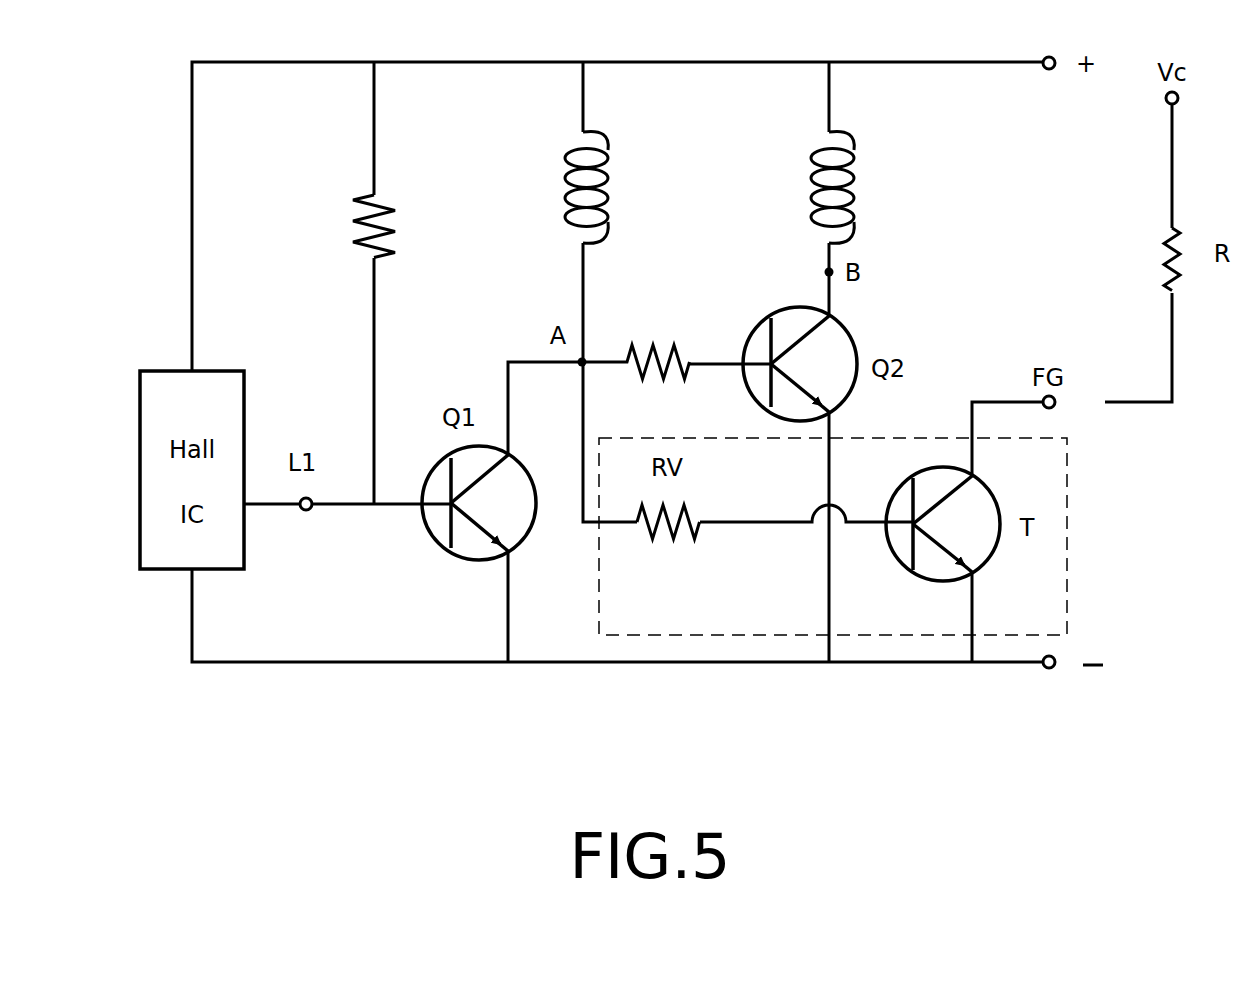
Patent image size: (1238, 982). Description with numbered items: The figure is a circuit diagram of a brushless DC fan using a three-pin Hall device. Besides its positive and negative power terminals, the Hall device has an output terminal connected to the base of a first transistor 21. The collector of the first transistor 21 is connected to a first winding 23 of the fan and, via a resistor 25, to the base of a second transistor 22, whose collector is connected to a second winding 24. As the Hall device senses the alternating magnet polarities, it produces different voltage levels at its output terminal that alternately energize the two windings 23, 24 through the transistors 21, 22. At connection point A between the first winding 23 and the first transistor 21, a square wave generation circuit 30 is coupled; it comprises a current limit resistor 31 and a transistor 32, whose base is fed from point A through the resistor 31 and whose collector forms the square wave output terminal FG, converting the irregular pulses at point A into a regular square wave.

The first transistor 21 is at (471, 520).
The second transistor 22 is at (793, 322).
The first winding 23 is at (611, 152).
The second winding 24 is at (853, 167).
The resistor 25 is at (636, 342).
The square wave generation circuit 30 is at (792, 612).
The current limit resistor 31 is at (668, 541).
The transistor 32 is at (931, 534).